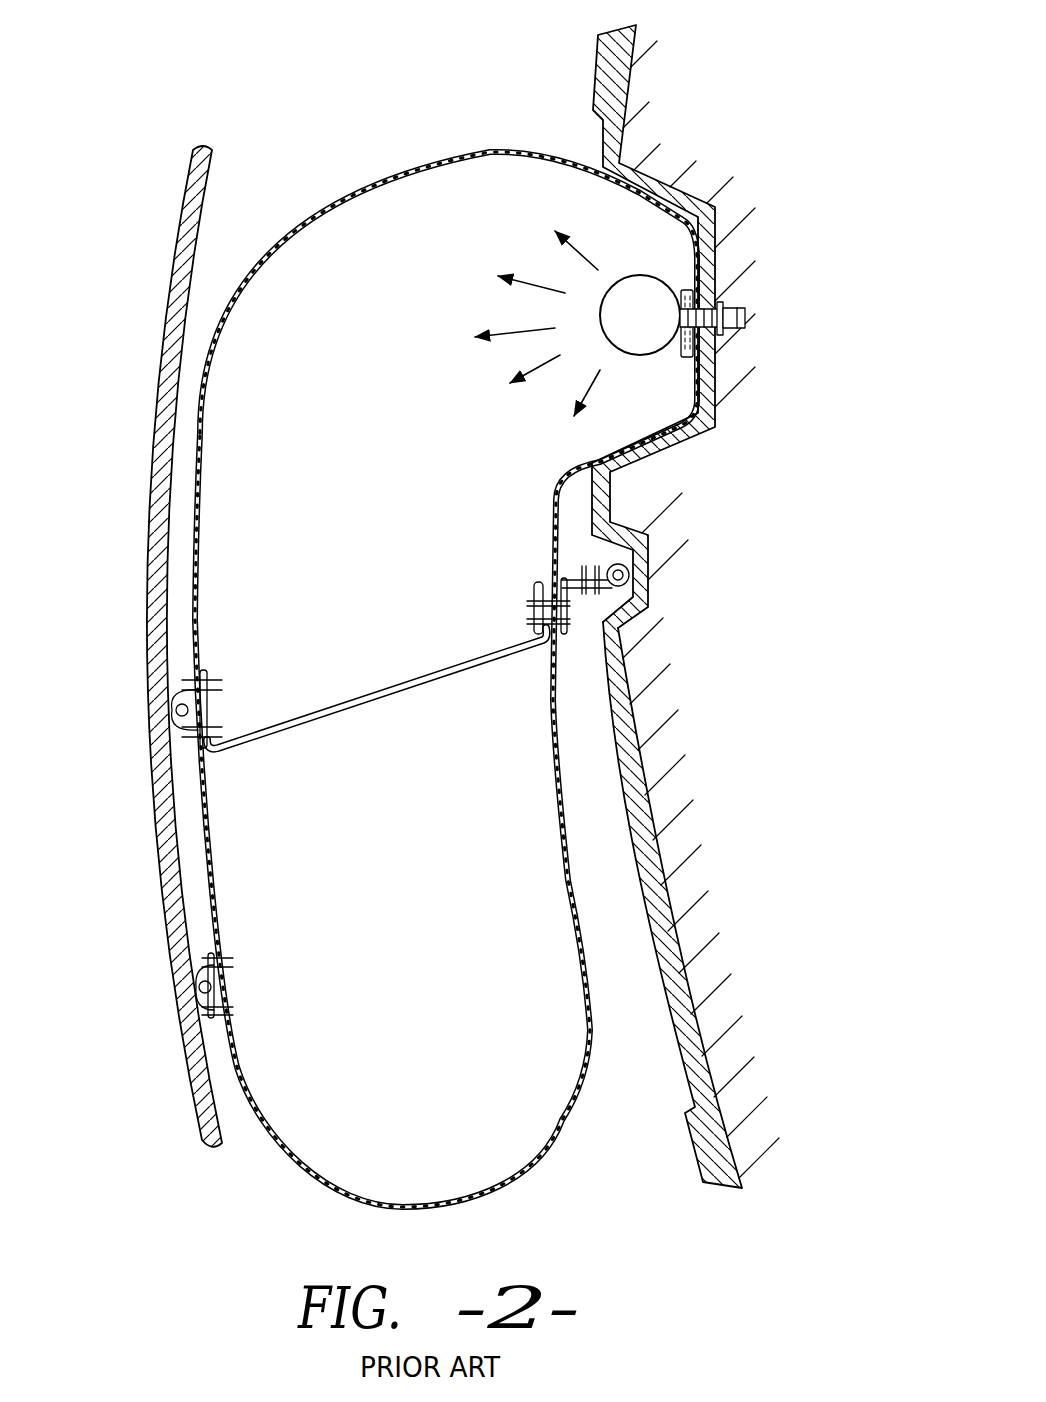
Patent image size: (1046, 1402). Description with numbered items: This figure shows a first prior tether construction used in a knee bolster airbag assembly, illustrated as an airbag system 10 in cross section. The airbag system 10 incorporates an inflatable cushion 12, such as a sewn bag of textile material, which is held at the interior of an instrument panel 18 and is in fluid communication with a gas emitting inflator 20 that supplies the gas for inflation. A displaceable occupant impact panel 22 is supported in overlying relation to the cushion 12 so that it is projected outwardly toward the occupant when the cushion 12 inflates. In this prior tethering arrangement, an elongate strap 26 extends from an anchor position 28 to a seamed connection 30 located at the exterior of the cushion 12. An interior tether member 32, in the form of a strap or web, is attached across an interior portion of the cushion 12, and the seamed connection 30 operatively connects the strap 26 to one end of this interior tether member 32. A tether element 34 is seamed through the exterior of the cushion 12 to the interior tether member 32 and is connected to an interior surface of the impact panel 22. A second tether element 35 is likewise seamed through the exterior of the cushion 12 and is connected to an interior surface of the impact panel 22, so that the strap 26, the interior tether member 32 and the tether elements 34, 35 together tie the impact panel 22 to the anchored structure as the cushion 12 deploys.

The airbag system 10 is at (703, 195).
The inflatable cushion 12 is at (450, 152).
The instrument panel 18 is at (682, 1055).
The gas emitting inflator 20 is at (660, 352).
The displaceable occupant impact panel 22 is at (180, 1018).
The elongate strap 26 is at (590, 596).
The anchor position 28 is at (647, 533).
The seamed connection 30 is at (570, 620).
The interior tether member 32 is at (408, 676).
The tether element 34 is at (177, 692).
The tether element 35 is at (197, 972).